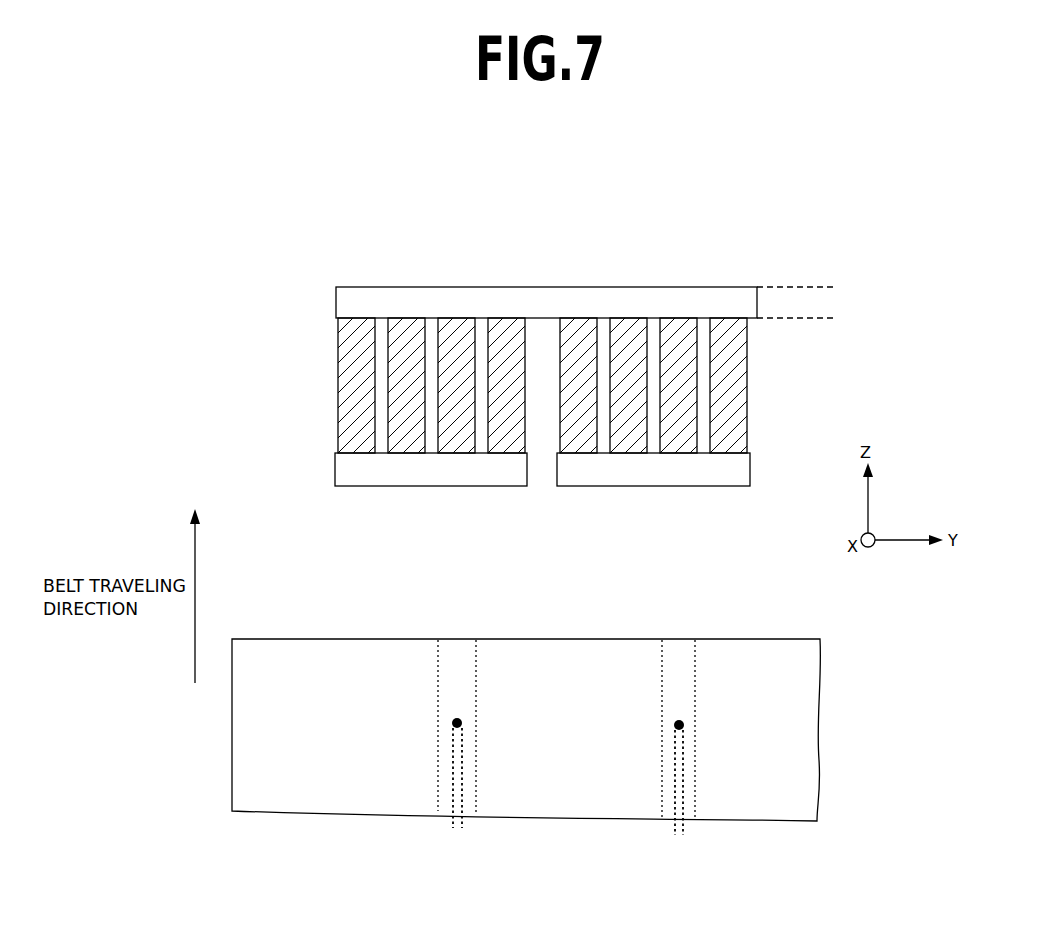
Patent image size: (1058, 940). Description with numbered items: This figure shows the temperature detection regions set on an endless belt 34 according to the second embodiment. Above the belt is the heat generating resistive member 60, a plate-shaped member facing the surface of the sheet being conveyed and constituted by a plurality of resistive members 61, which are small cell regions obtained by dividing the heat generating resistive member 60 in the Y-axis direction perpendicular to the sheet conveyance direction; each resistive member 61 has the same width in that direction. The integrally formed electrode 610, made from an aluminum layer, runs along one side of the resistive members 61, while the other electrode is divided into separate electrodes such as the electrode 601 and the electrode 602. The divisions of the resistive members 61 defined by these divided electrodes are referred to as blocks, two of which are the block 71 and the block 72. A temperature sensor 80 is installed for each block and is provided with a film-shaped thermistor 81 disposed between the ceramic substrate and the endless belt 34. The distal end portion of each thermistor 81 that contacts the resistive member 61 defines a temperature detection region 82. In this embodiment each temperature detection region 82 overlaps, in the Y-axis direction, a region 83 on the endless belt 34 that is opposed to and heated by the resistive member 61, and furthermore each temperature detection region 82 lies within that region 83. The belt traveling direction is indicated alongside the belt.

The endless belt 34 is at (273, 639).
The heat generating resistive member 60 is at (529, 332).
The resistive member 61 is at (353, 325).
The block 71 is at (465, 232).
The block 72 is at (721, 232).
The temperature sensor 80 is at (457, 846).
The thermistor 81 is at (463, 762).
The temperature detection region 82 is at (462, 721).
The region opposed to the resistive member 83 is at (476, 655).
The electrode 601 is at (350, 476).
The electrode 602 is at (738, 466).
The electrode 610 is at (788, 301).